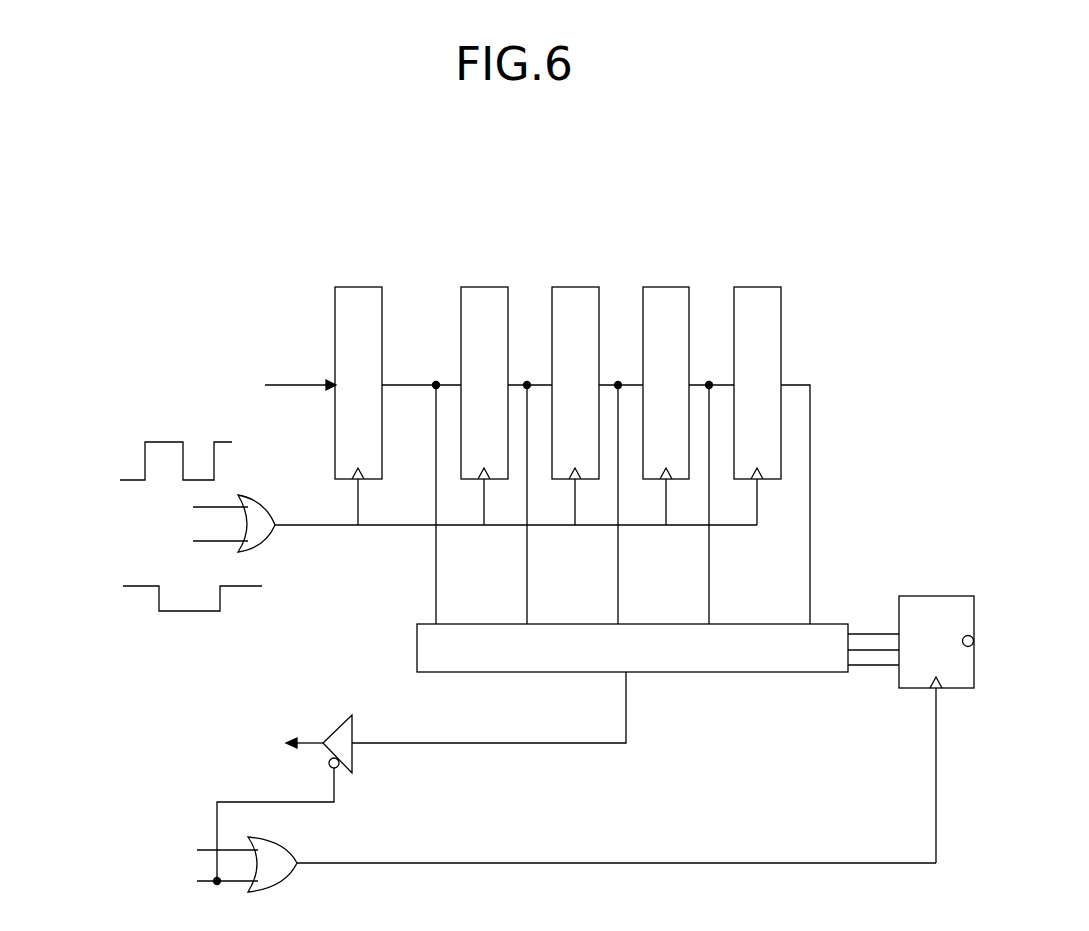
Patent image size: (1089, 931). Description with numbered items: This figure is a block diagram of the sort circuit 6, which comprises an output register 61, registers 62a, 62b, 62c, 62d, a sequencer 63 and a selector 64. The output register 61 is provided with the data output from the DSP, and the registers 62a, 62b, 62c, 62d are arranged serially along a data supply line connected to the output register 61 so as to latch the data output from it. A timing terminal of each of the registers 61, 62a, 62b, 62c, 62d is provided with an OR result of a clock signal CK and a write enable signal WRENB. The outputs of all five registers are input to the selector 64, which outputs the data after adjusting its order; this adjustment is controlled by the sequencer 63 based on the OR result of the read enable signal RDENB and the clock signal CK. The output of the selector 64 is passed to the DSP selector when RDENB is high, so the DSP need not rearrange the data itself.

The sort circuit 6 is at (812, 189).
The output register 61 is at (354, 287).
The register 62a is at (480, 287).
The register 62b is at (572, 287).
The register 62c is at (663, 287).
The register 62d is at (754, 287).
The sequencer 63 is at (938, 596).
The selector 64 is at (713, 673).